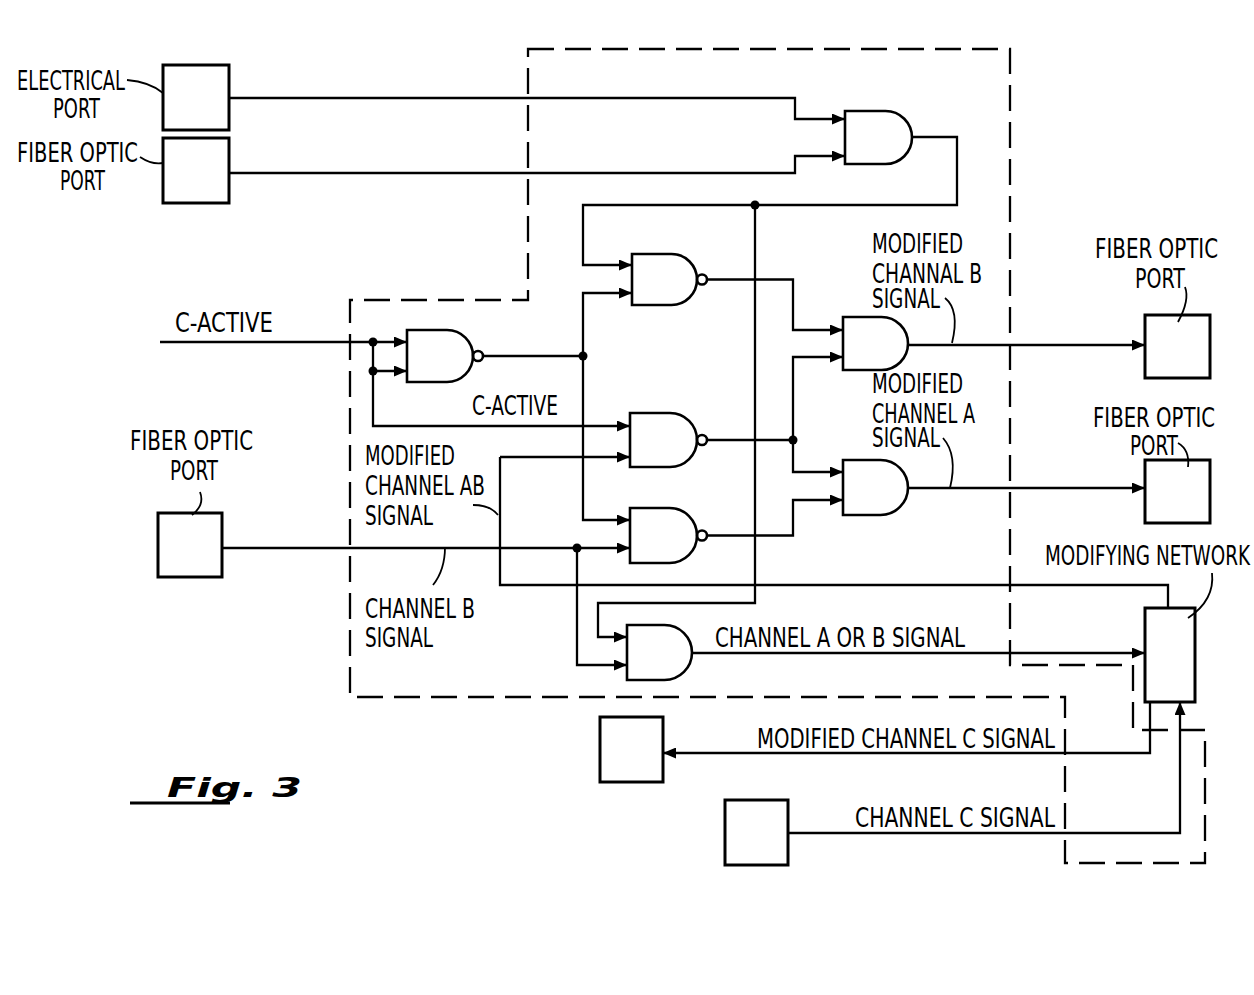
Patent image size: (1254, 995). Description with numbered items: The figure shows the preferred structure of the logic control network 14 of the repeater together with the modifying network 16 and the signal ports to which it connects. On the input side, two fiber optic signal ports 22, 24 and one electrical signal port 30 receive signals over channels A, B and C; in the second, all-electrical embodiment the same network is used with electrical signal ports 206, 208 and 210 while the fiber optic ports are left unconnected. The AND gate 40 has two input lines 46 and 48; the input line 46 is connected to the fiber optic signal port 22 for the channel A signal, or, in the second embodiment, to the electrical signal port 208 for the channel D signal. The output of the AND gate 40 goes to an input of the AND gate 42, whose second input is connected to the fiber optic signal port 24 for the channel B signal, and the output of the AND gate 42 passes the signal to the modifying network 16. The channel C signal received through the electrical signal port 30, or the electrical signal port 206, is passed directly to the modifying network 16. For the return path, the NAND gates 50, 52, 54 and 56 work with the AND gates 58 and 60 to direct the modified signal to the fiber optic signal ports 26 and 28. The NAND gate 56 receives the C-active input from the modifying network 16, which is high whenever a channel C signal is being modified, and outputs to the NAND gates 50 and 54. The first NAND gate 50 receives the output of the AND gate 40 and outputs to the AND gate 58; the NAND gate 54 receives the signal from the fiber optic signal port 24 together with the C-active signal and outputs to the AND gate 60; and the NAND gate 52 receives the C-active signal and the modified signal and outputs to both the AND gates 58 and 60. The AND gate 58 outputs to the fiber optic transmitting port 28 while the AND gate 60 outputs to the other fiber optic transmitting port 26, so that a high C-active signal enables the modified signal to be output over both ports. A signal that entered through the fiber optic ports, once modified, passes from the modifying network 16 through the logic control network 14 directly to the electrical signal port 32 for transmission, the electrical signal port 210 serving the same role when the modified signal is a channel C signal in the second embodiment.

The logic control network 14 is at (405, 302).
The modifying network 16 is at (1180, 662).
The fiber optic signal port 22 is at (206, 178).
The fiber optic signal port 24 is at (202, 553).
The fiber optic signal port 26 is at (1189, 502).
The fiber optic signal port 28 is at (1189, 357).
The electrical signal port 30 is at (649, 832).
The electrical signal port 32 is at (529, 749).
The AND gate 40 is at (890, 152).
The AND gate 42 is at (670, 665).
The input line 46 is at (665, 173).
The input line 48 is at (677, 98).
The NAND gate 50 is at (674, 292).
The NAND gate 52 is at (672, 453).
The NAND gate 54 is at (672, 548).
The NAND gate 56 is at (450, 369).
The AND gate 58 is at (886, 358).
The AND gate 60 is at (886, 502).
The electrical signal port 206 is at (725, 836).
The electrical signal port 208 is at (214, 112).
The electrical signal port 210 is at (600, 752).